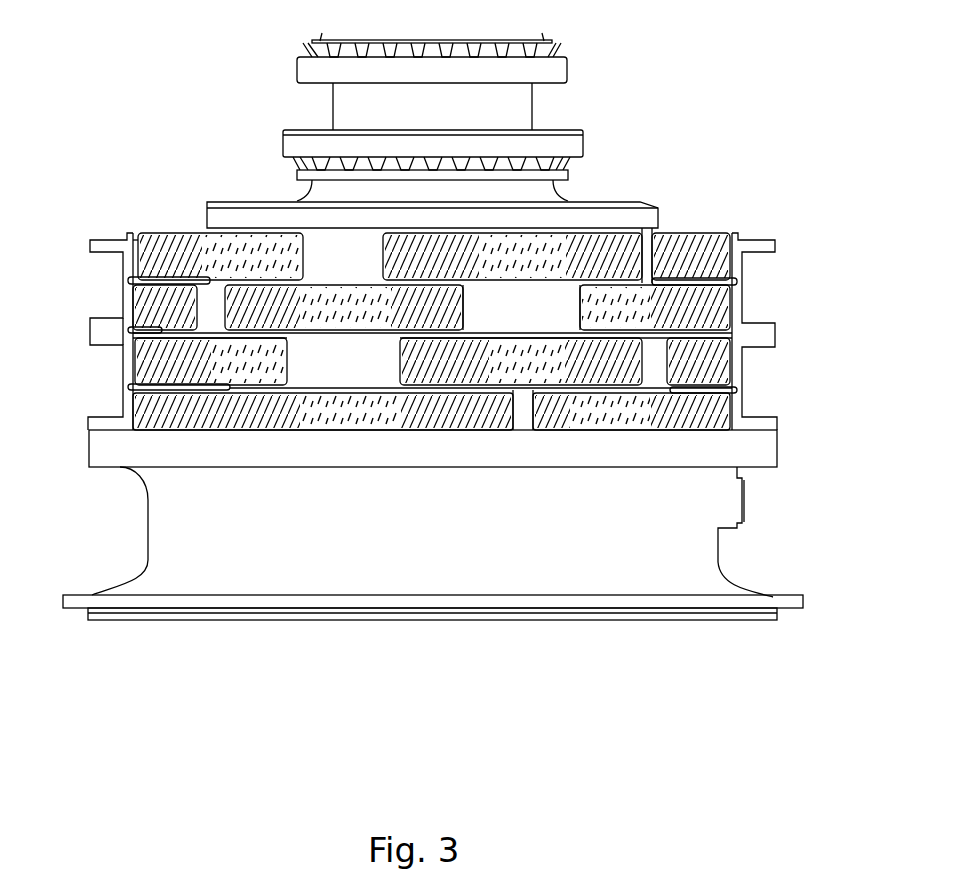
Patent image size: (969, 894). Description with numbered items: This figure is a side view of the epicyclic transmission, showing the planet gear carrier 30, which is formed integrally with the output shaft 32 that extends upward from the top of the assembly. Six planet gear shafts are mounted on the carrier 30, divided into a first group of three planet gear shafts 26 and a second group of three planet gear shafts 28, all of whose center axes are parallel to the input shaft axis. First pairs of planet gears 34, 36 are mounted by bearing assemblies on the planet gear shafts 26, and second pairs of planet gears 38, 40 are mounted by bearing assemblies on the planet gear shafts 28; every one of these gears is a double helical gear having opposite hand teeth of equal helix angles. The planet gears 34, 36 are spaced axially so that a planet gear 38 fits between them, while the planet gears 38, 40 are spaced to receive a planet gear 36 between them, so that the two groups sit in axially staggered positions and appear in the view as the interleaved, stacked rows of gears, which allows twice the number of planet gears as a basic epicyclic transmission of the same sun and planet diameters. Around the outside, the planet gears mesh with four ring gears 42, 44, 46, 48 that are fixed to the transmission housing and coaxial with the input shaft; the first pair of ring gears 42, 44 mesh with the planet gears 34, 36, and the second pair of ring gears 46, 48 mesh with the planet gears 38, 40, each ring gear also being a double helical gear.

The planet gear shaft 26 is at (330, 363).
The planet gear shaft 28 is at (130, 282).
The planet gear carrier 30 is at (620, 215).
The output shaft 32 is at (530, 108).
The planet gear 34 is at (710, 390).
The planet gear 36 is at (340, 287).
The planet gear 38 is at (132, 328).
The planet gear 40 is at (158, 233).
The ring gear 42 is at (147, 403).
The ring gear 44 is at (143, 298).
The ring gear 46 is at (140, 355).
The ring gear 48 is at (140, 233).